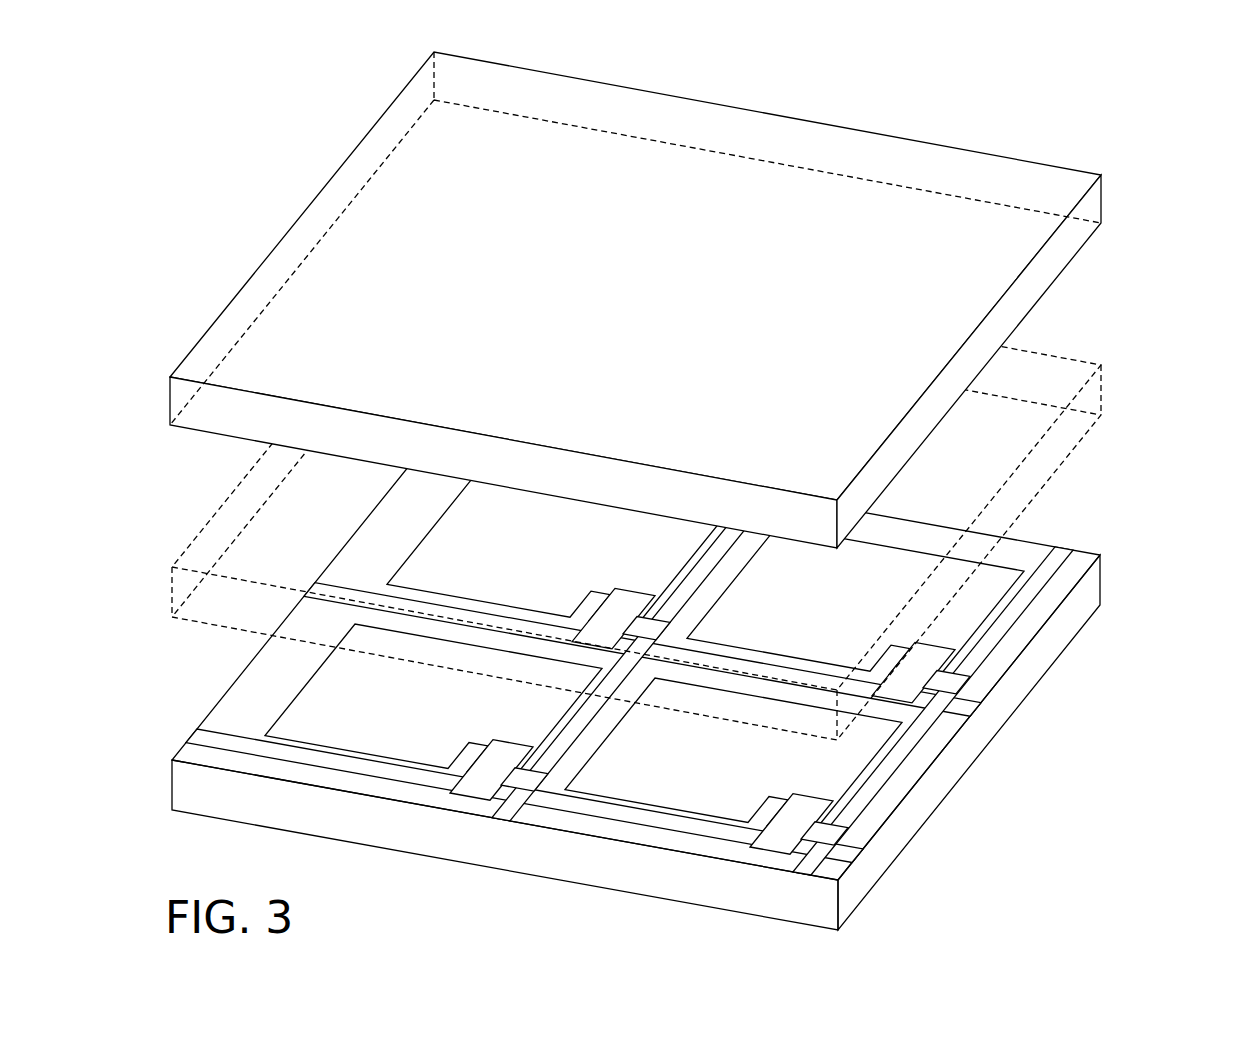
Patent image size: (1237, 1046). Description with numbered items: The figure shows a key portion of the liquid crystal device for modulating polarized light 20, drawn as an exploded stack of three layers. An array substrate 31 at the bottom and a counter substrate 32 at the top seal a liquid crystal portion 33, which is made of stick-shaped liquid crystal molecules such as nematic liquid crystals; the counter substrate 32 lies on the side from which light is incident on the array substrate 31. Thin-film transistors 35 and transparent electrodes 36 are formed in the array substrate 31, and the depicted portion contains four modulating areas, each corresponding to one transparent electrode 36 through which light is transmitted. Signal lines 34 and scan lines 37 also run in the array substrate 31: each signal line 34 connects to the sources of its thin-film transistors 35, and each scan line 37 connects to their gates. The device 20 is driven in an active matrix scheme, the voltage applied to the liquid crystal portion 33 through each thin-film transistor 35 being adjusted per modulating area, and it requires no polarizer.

The liquid crystal device for modulating polarized light 20 is at (1085, 141).
The array substrate 31 is at (1053, 640).
The counter substrate 32 is at (1040, 270).
The liquid crystal portion 33 is at (1102, 380).
The signal line 34 is at (853, 846).
The thin-film transistor 35 is at (845, 858).
The transparent electrode 36 is at (822, 767).
The scan line 37 is at (920, 727).